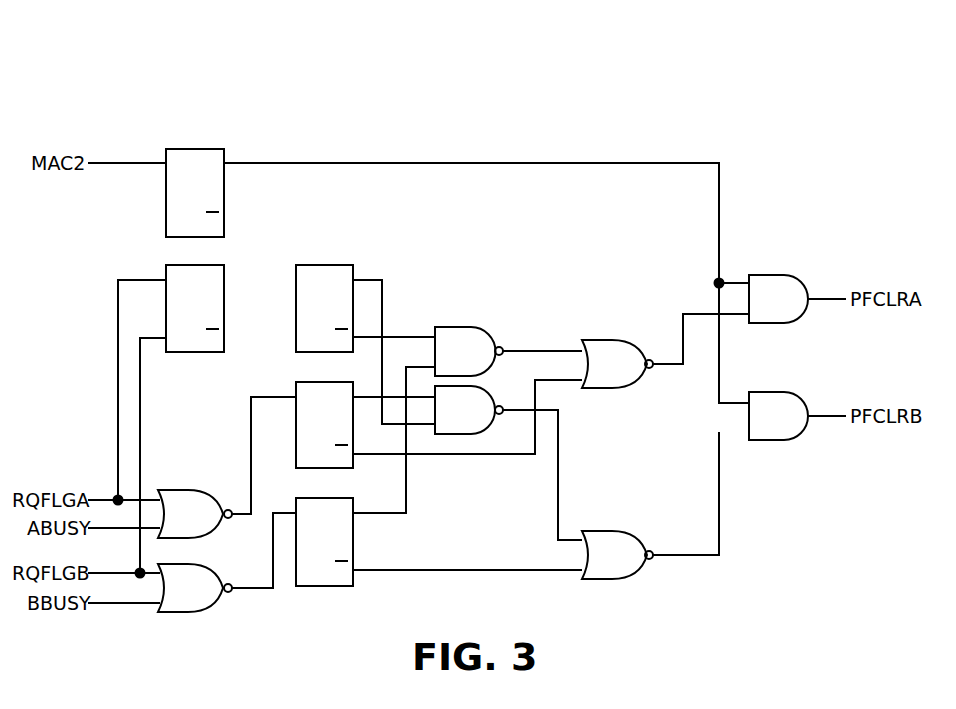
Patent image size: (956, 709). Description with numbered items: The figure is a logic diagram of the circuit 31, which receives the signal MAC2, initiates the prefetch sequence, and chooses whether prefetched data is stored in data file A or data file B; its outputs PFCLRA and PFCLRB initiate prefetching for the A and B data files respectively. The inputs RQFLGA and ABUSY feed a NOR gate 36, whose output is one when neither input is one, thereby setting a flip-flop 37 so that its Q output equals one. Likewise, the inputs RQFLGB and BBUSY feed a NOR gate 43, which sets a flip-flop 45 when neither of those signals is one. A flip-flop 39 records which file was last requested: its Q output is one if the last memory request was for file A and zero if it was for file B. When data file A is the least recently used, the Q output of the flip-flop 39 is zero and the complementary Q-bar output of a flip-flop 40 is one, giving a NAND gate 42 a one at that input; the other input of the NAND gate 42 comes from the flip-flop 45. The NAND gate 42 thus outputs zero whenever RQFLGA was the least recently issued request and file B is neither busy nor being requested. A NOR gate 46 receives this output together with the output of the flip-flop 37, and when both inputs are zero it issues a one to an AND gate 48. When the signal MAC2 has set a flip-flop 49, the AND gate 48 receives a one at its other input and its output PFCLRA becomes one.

The circuit 31 is at (245, 108).
The flip-flop 49 is at (224, 199).
The flip-flop 39 is at (224, 312).
The flip-flop 40 is at (320, 265).
The flip-flop 37 is at (296, 386).
The flip-flop 45 is at (353, 540).
The NAND gate 42 is at (462, 327).
The NOR gate 46 is at (610, 340).
The AND gate 48 is at (778, 275).
The NOR gate 36 is at (182, 490).
The NOR gate 43 is at (205, 564).